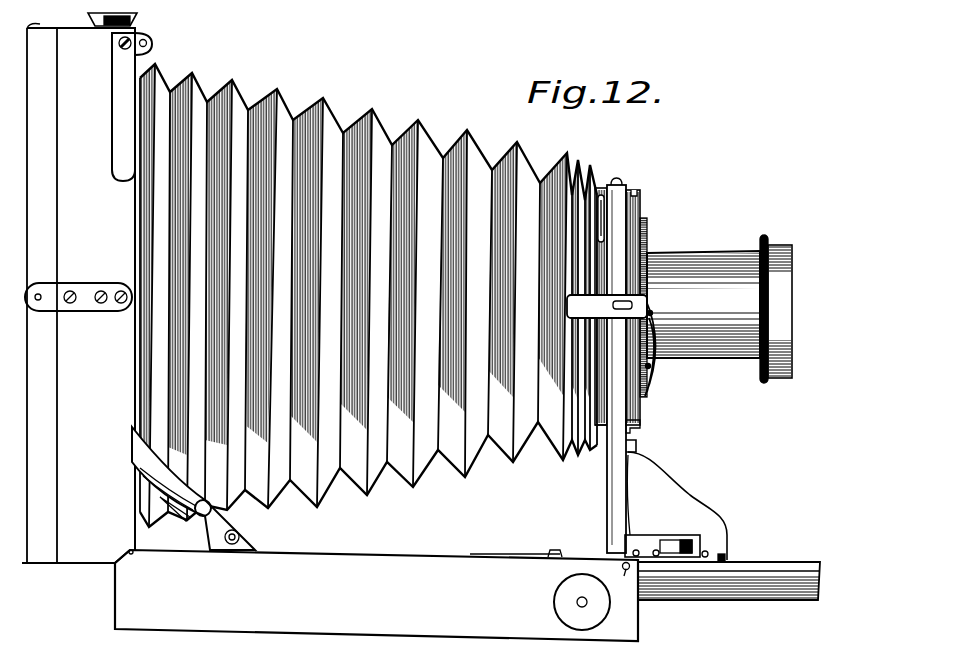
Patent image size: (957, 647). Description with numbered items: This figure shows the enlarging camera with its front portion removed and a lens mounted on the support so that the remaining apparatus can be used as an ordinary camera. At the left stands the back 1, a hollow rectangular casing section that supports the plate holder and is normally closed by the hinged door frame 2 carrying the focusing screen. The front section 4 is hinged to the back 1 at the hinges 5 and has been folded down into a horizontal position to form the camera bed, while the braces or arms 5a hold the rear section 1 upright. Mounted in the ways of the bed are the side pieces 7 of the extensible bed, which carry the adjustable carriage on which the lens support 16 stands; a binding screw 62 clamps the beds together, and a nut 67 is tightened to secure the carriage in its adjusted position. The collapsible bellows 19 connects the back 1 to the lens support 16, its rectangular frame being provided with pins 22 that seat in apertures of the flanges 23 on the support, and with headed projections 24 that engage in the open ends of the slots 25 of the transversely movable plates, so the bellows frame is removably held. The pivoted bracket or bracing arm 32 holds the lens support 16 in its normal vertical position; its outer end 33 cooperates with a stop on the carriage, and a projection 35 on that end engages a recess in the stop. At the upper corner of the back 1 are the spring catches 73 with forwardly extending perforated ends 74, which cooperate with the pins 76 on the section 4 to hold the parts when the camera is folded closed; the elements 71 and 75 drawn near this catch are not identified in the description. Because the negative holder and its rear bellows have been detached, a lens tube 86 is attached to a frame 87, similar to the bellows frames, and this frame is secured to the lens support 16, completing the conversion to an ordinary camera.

The back 1 is at (78, 294).
The hinged door frame 2 is at (42, 295).
The front section 4 is at (376, 595).
The hinges 5 is at (135, 553).
The braces or arms 5a is at (180, 489).
The side pieces 7 is at (787, 585).
The lens support 16 is at (617, 253).
The collapsible bellows 19 is at (481, 458).
The pins 22 is at (602, 190).
The flanges 23 is at (633, 196).
The headed projections 24 is at (636, 440).
The slots 25 is at (638, 426).
The pivoted bracket or bracing arm 32 is at (677, 506).
The outer end 33 is at (727, 547).
The projection 35 is at (708, 551).
The binding screw 62 is at (577, 603).
The nut 67 is at (671, 540).
The top plate 71 is at (47, 30).
The spring catches 73 is at (114, 128).
The perforated ends 74 is at (142, 36).
The pivot hole 75 is at (148, 43).
The pins 76 is at (623, 574).
The lens tube 86 is at (719, 309).
The frame 87 is at (637, 228).